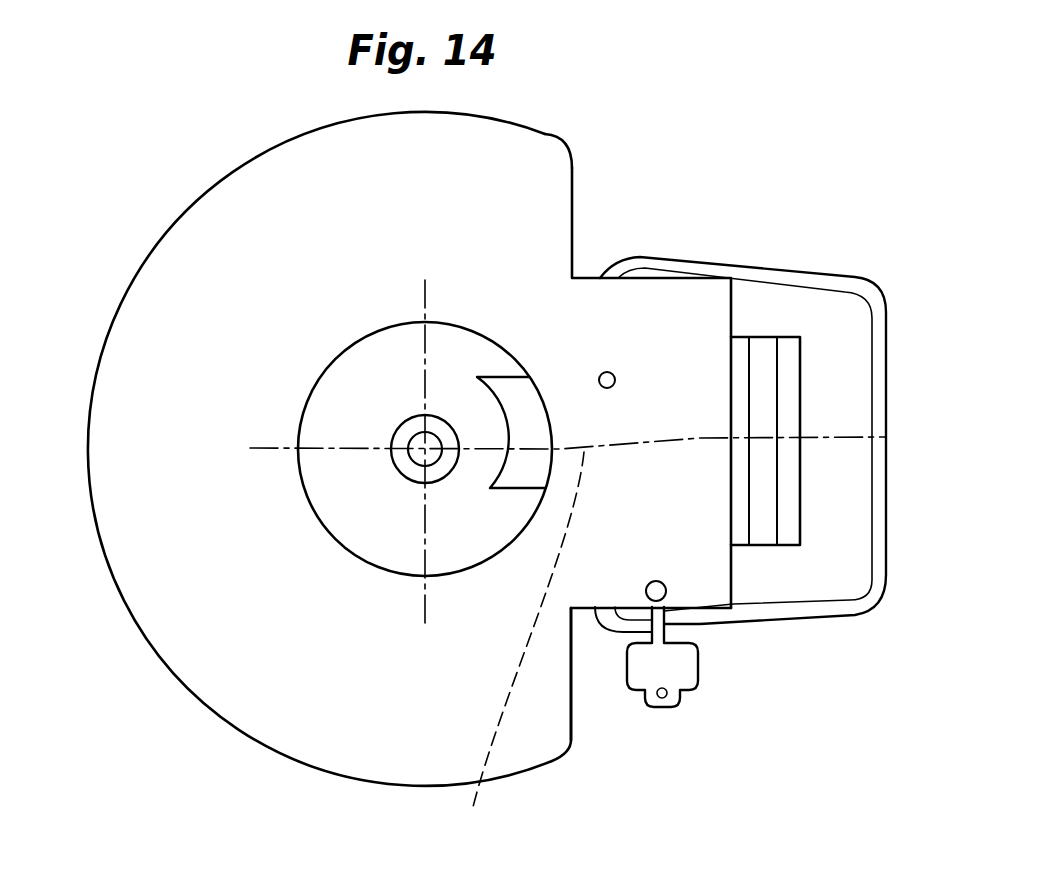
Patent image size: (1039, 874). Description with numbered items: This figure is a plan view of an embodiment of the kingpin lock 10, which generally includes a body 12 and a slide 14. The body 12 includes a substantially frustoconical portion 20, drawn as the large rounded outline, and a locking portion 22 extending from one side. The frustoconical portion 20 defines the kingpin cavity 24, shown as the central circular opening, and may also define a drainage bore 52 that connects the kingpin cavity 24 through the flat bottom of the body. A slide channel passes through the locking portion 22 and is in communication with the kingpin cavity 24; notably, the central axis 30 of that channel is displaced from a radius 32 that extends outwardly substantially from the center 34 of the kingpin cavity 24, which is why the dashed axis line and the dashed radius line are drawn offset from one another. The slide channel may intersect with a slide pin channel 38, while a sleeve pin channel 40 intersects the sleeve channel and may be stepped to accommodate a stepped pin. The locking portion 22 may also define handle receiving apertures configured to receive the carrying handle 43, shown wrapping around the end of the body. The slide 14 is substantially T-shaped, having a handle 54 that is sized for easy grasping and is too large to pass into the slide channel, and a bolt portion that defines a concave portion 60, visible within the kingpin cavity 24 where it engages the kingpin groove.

The kingpin lock 10 is at (631, 137).
The body 12 is at (541, 128).
The slide 14 is at (800, 383).
The frustoconical portion 20 is at (531, 768).
The locking portion 22 is at (733, 587).
The kingpin cavity 24 is at (390, 550).
The central axis 30 is at (817, 440).
The radius 32 is at (473, 807).
The center 34 is at (417, 453).
The slide pin channel 38 is at (612, 372).
The sleeve pin channel 40 is at (667, 591).
The carrying handle 43 is at (887, 576).
The drainage bore 52 is at (412, 429).
The handle 54 is at (800, 516).
The concave portion 60 is at (497, 405).